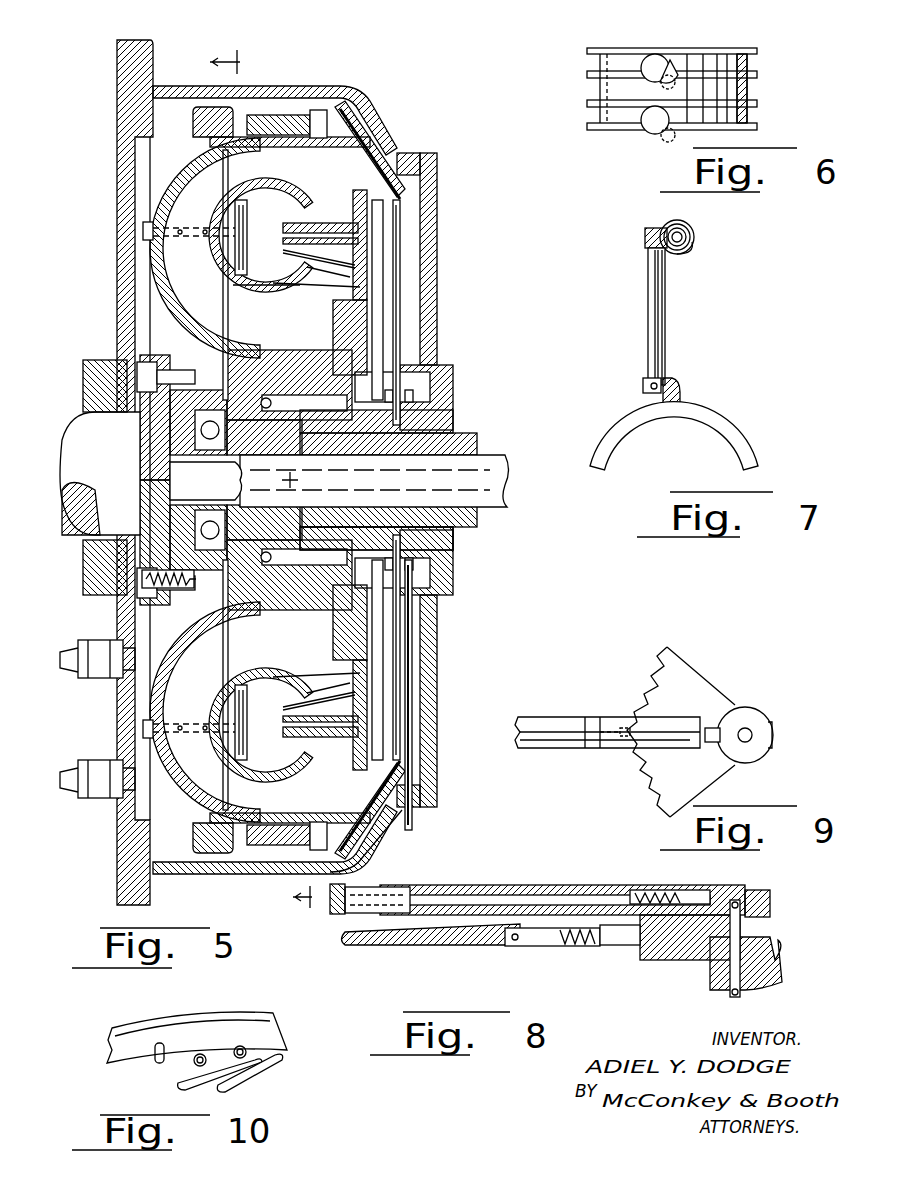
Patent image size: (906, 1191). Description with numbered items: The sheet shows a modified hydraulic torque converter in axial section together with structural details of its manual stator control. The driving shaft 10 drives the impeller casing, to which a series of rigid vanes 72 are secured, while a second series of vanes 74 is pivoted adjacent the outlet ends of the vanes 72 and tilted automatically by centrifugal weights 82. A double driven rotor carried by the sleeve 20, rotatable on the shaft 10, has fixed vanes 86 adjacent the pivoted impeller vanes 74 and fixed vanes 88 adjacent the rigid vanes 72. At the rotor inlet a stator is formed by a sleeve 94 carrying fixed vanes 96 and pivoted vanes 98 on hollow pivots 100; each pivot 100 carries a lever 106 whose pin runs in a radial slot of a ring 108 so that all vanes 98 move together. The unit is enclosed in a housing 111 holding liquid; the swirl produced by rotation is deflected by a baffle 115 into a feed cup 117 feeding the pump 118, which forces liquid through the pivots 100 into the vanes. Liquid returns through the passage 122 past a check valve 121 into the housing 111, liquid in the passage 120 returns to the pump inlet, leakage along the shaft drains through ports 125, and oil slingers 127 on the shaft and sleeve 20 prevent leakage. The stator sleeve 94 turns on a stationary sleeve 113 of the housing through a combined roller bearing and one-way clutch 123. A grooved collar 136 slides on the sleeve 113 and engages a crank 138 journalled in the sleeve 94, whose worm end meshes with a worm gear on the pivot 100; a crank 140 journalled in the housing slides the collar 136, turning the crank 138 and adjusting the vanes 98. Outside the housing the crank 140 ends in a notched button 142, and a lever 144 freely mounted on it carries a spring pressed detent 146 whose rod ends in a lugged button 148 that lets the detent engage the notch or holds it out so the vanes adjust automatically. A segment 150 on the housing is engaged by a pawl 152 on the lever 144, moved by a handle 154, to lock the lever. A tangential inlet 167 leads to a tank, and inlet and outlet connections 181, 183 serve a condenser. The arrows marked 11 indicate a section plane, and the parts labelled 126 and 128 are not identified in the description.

In FIG. 5, the shaft 10 is at (482, 475).
In FIG. 5, the section line 11 is at (261, 479).
In FIG. 5, the sleeve 20 is at (450, 450).
In FIG. 5, the rigid vanes 72 is at (275, 480).
In FIG. 7, the rigid vanes 72 is at (693, 230).
In FIG. 5, the pivoted vanes 74 is at (205, 480).
In FIG. 5, the centrifugal weights 82 is at (235, 256).
In FIG. 5, the fixed vanes 86 is at (261, 472).
In FIG. 5, the fixed vanes 88 is at (266, 295).
In FIG. 5, the sleeve 94 is at (280, 392).
In FIG. 5, the fixed vanes 96 is at (319, 480).
In FIG. 5, the vanes 98 is at (316, 470).
In FIG. 10, the vanes 98 is at (255, 1065).
In FIG. 5, the hollow pivots 100 is at (320, 230).
In FIG. 10, the hollow pivots 100 is at (235, 1080).
In FIG. 10, the lever 106 is at (232, 1068).
In FIG. 10, the ring 108 is at (130, 1045).
In FIG. 5, the housing 111 is at (355, 93).
In FIG. 5, the stationary sleeve 113 is at (420, 420).
In FIG. 5, the baffle 115 is at (337, 108).
In FIG. 5, the feed cup 117 is at (398, 172).
In FIG. 5, the pump 118 is at (380, 273).
In FIG. 5, the passage 120 is at (253, 373).
In FIG. 5, the check valve 121 is at (160, 582).
In FIG. 5, the passage 122 is at (200, 360).
In FIG. 5, the combined roller bearing and one-way clutch 123 is at (397, 362).
In FIG. 5, the ports 125 is at (400, 433).
In FIG. 7, the ratchet 126 is at (660, 232).
In FIG. 9, the ratchet 126 is at (650, 678).
In FIG. 5, the oil slingers 127 is at (400, 527).
In FIG. 9, the slot 128 is at (625, 740).
In FIG. 5, the collar 136 is at (423, 403).
In FIG. 6, the collar 136 is at (620, 128).
In FIG. 7, the collar 136 is at (730, 433).
In FIG. 5, the crank 138 is at (363, 297).
In FIG. 6, the crank 138 is at (660, 58).
In FIG. 7, the crank 138 is at (662, 299).
In FIG. 5, the crank 140 is at (413, 693).
In FIG. 6, the crank 140 is at (655, 128).
In FIG. 9, the crank 140 is at (752, 737).
In FIG. 8, the crank 140 is at (745, 992).
In FIG. 9, the notched button 142 is at (742, 715).
In FIG. 8, the notched button 142 is at (746, 940).
In FIG. 9, the lever 144 is at (545, 718).
In FIG. 8, the lever 144 is at (460, 887).
In FIG. 9, the spring pressed detent 146 is at (712, 728).
In FIG. 8, the spring pressed detent 146 is at (705, 897).
In FIG. 8, the button 148 is at (332, 902).
In FIG. 8, the segment 150 is at (672, 948).
In FIG. 8, the pawl 152 is at (608, 948).
In FIG. 8, the handle 154 is at (420, 942).
In FIG. 5, the tangential inlet 167 is at (380, 853).
In FIG. 5, the inlet connection 181 is at (85, 658).
In FIG. 5, the outlet connection 183 is at (88, 790).